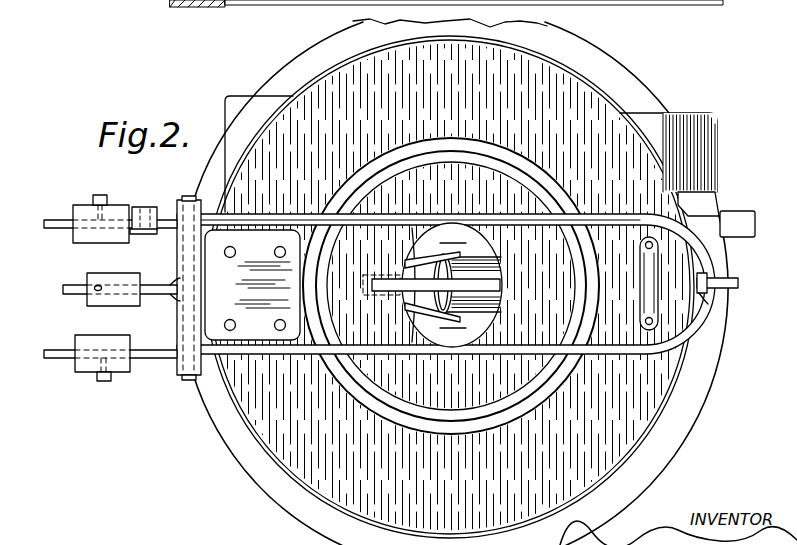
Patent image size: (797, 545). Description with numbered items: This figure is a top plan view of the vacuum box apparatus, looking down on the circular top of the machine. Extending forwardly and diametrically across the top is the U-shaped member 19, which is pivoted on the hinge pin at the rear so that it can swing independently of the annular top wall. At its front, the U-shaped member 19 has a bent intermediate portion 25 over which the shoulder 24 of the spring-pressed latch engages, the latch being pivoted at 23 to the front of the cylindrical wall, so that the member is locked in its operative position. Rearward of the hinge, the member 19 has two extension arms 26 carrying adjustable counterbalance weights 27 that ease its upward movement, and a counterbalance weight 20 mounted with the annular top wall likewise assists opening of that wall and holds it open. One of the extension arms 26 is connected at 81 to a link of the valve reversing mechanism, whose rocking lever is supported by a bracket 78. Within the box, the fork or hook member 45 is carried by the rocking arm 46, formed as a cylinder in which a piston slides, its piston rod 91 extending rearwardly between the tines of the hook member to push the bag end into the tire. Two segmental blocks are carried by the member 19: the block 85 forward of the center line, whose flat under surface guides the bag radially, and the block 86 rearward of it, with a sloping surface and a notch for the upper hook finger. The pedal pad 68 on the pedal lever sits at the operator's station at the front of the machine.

The U-shaped member 19 is at (398, 220).
The counterbalance weight 20 is at (88, 300).
The pivot of latch 23 is at (708, 304).
The shoulder 24 is at (708, 282).
The bent intermediate portion 25 is at (712, 297).
The extension arms 26 is at (50, 220).
The adjustable counterbalance weights 27 is at (82, 205).
The fork or hook member 45 is at (490, 286).
The rocking arm 46 is at (464, 284).
The pedal pad 68 is at (742, 213).
The bracket 78 is at (158, 207).
The connection of link to extension arm 81 is at (150, 234).
The segmental block 85 is at (477, 285).
The segmental block 86 is at (431, 307).
The piston rod 91 is at (405, 263).